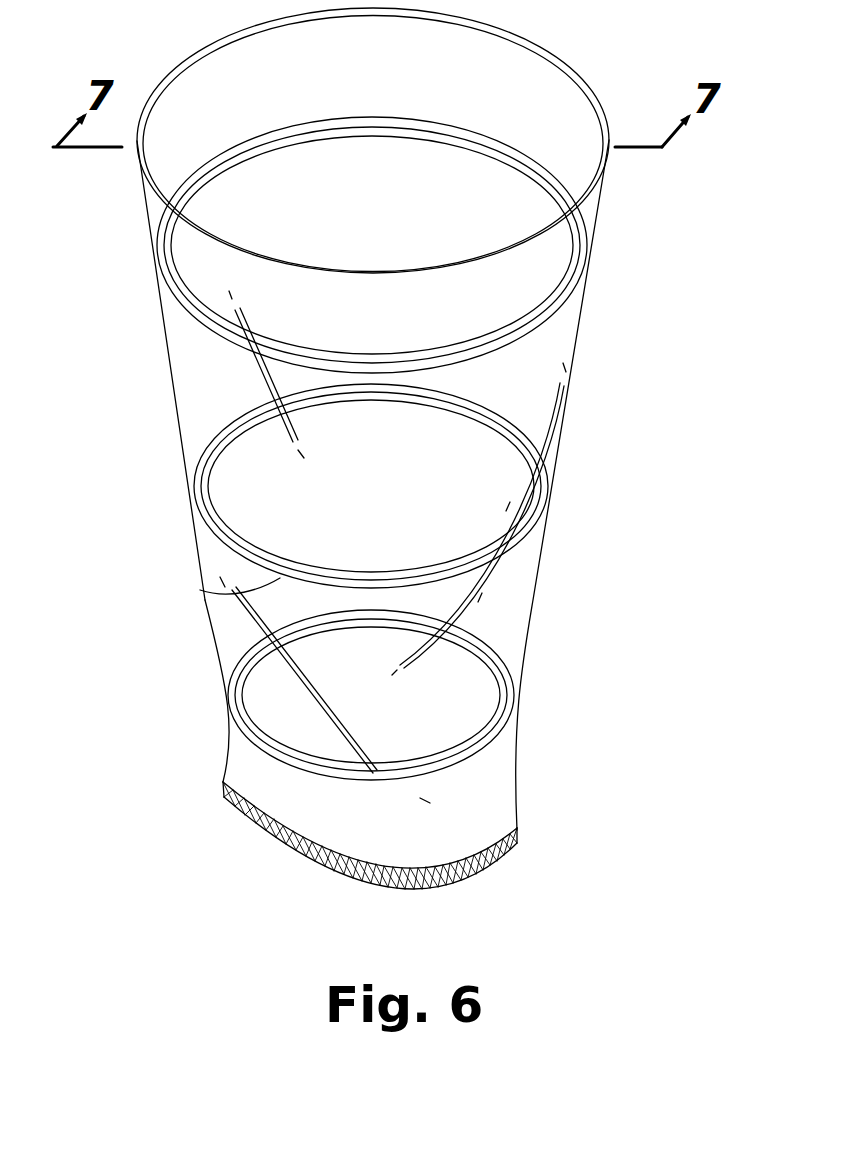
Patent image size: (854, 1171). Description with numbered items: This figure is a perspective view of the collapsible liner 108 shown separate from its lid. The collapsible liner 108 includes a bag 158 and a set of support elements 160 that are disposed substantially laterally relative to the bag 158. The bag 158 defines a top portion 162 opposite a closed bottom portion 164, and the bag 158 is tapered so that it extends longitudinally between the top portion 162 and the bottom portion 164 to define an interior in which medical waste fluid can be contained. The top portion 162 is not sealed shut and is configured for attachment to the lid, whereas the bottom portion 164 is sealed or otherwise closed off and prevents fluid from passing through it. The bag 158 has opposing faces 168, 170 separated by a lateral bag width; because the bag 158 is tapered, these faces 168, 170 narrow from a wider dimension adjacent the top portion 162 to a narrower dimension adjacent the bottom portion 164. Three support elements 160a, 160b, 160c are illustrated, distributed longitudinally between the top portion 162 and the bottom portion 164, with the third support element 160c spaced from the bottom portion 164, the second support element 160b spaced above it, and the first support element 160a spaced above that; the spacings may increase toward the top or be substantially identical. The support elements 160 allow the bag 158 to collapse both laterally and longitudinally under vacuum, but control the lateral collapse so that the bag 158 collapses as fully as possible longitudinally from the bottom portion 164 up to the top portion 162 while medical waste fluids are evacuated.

The collapsible liner 108 is at (658, 81).
The bag 158 is at (200, 408).
The support elements 160 is at (280, 578).
The first support element 160a is at (572, 288).
The second support element 160b is at (532, 525).
The third support element 160c is at (500, 727).
The top portion 162 is at (197, 55).
The bottom portion 164 is at (276, 843).
The opposing face 168 is at (170, 348).
The opposing face 170 is at (570, 357).